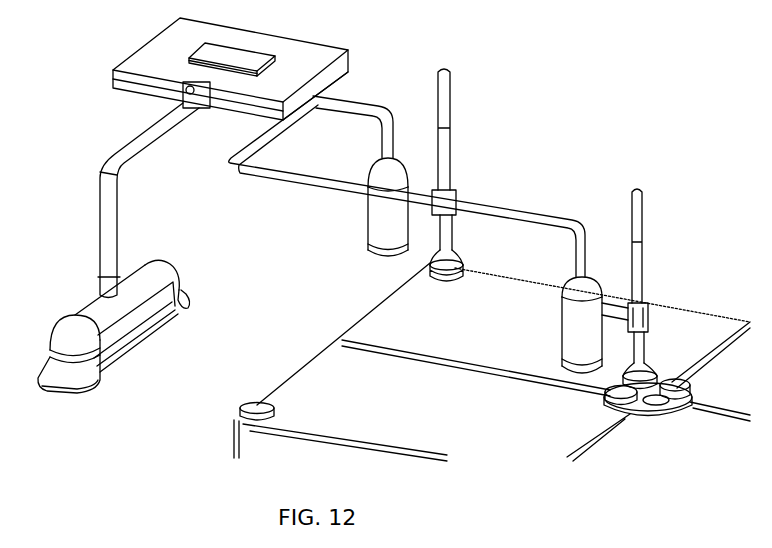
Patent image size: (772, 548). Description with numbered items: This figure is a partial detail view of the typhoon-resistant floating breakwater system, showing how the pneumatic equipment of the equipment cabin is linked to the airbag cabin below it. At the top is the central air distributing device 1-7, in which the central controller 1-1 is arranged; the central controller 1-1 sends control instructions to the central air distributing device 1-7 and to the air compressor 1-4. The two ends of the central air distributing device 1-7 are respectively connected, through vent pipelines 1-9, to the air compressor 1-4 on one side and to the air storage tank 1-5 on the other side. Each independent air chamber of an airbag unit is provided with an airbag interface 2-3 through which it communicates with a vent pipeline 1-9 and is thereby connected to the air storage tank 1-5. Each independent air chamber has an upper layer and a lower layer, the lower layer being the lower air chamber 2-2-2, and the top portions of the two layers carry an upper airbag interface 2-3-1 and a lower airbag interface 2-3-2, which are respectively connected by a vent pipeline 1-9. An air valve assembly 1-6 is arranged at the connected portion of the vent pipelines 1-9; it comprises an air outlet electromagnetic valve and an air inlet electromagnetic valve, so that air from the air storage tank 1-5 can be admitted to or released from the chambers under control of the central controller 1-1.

The central controller 1-1 is at (200, 48).
The central air distributing device 1-7 is at (113, 80).
The vent pipeline 1-9 is at (300, 165).
The air compressor 1-4 is at (78, 308).
The airbag interface 2-3 is at (463, 252).
The air storage tank 1-5 is at (560, 317).
The air valve assembly 1-6 is at (648, 315).
The lower air chamber 2-2-2 is at (332, 365).
The upper airbag interface 2-3-1 is at (253, 407).
The lower airbag interface 2-3-2 is at (613, 388).